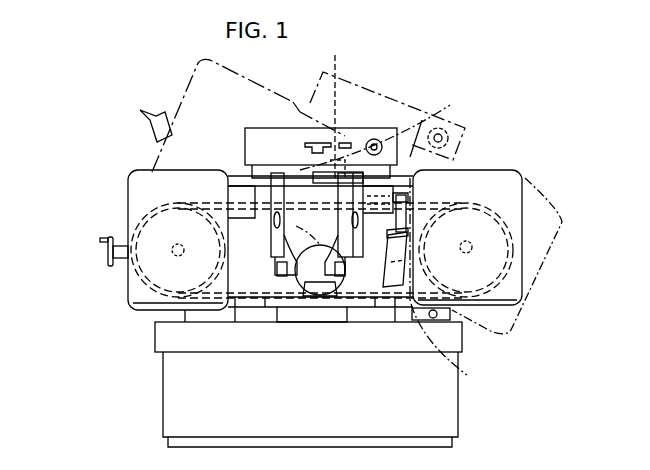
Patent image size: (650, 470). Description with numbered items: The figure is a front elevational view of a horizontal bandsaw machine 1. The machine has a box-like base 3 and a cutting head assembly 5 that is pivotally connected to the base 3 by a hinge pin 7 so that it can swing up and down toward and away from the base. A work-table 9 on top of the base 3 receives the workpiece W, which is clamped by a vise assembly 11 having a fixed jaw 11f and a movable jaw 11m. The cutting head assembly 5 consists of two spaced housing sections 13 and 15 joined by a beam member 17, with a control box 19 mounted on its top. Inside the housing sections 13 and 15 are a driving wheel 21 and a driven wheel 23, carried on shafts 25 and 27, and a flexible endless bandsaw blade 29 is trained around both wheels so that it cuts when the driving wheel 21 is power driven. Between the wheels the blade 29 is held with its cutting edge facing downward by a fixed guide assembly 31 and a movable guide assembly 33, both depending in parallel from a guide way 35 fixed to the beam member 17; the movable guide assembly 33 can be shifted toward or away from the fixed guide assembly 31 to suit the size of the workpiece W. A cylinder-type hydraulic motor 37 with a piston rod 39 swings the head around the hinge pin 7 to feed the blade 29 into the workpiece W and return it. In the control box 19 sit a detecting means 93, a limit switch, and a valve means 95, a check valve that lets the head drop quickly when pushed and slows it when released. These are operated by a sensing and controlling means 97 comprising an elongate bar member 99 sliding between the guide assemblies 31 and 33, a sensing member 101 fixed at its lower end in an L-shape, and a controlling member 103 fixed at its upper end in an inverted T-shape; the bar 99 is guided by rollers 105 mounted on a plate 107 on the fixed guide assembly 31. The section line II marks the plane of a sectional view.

The horizontal bandsaw machine 1 is at (505, 152).
The base 3 is at (458, 416).
The cutting head assembly 5 is at (470, 168).
The hinge pin 7 is at (437, 320).
The work-table 9 is at (302, 322).
The vise assembly 11 is at (283, 270).
The fixed jaw 11f is at (363, 290).
The movable jaw 11m is at (283, 290).
The housing section 13 is at (513, 183).
The housing section 15 is at (133, 189).
The beam member 17 is at (222, 187).
The control box 19 is at (252, 135).
The driving wheel 21 is at (505, 279).
The driven wheel 23 is at (142, 287).
The shaft 25 is at (475, 247).
The shaft 27 is at (172, 248).
The bandsaw blade 29 is at (237, 297).
The fixed guide assembly 31 is at (362, 251).
The movable guide assembly 33 is at (262, 186).
The guide way 35 is at (233, 213).
The hydraulic motor 37 is at (392, 290).
The piston rod 39 is at (418, 240).
The detecting means 93 is at (300, 137).
The valve means 95 is at (390, 103).
The sensing and controlling means 97 is at (352, 128).
The elongate bar member 99 is at (438, 127).
The sensing member 101 is at (308, 290).
The controlling member 103 is at (345, 112).
The rollers 105 is at (385, 210).
The plate 107 is at (318, 187).
The workpiece W is at (318, 259).
The section line II- II is at (414, 196).